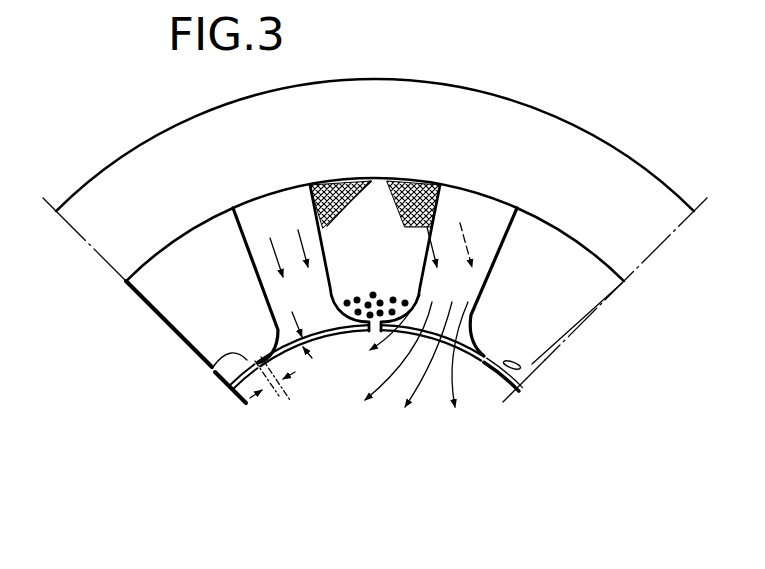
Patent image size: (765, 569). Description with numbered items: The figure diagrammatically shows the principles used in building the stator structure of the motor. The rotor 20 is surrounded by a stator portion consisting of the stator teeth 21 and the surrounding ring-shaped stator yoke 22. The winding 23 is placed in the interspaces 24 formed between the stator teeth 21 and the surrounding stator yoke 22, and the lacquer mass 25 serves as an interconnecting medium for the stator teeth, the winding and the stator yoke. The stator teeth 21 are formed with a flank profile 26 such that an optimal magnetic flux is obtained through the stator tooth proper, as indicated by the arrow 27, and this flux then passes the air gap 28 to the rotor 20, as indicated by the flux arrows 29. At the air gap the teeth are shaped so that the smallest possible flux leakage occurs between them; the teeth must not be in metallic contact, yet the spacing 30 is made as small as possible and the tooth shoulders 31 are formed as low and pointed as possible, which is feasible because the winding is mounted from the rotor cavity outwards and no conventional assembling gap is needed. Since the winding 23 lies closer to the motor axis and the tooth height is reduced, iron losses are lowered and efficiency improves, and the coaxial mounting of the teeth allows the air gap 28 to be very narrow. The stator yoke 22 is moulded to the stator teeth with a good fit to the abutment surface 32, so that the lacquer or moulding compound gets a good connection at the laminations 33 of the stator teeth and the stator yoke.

The rotor 20 is at (350, 459).
The stator teeth 21 is at (483, 210).
The stator yoke 22 is at (510, 143).
The winding 23 is at (375, 296).
The interspaces 24 is at (182, 285).
The lacquer mass 25 is at (322, 183).
The flank profile 26 is at (480, 346).
The arrow 27 is at (470, 313).
The air gap 28 is at (310, 343).
The flux arrows 29 is at (419, 395).
The spacing 30 is at (271, 389).
The tooth shoulders 31 is at (211, 368).
The abutment surface 32 is at (463, 187).
The laminations 33 is at (438, 195).